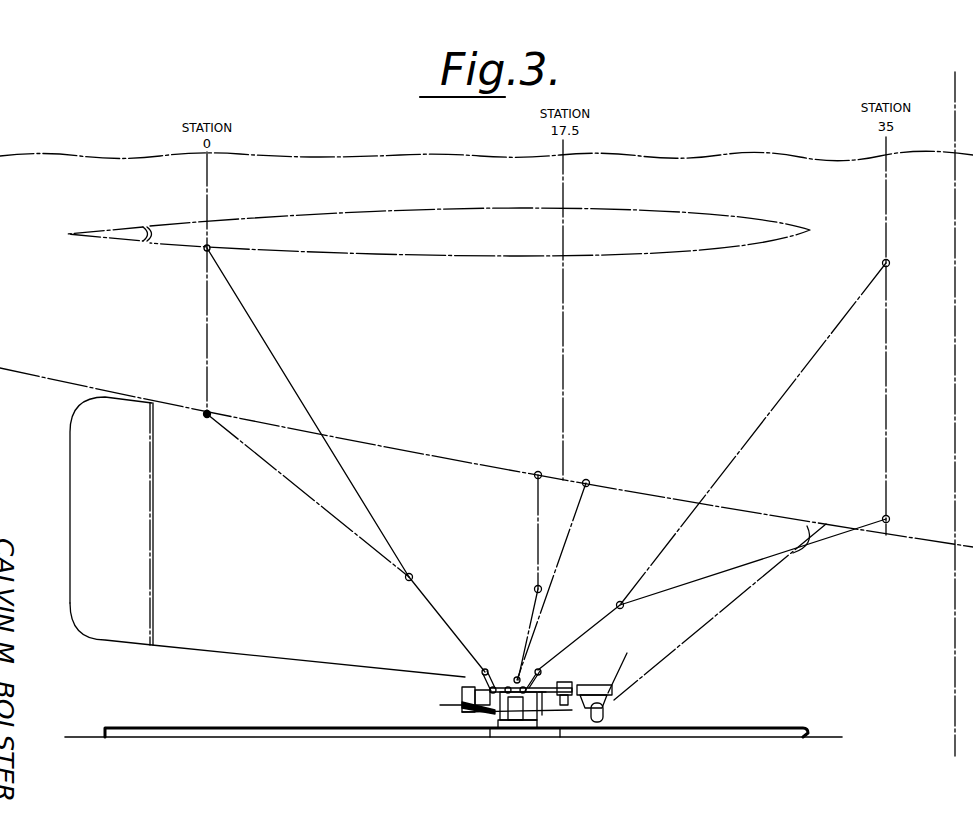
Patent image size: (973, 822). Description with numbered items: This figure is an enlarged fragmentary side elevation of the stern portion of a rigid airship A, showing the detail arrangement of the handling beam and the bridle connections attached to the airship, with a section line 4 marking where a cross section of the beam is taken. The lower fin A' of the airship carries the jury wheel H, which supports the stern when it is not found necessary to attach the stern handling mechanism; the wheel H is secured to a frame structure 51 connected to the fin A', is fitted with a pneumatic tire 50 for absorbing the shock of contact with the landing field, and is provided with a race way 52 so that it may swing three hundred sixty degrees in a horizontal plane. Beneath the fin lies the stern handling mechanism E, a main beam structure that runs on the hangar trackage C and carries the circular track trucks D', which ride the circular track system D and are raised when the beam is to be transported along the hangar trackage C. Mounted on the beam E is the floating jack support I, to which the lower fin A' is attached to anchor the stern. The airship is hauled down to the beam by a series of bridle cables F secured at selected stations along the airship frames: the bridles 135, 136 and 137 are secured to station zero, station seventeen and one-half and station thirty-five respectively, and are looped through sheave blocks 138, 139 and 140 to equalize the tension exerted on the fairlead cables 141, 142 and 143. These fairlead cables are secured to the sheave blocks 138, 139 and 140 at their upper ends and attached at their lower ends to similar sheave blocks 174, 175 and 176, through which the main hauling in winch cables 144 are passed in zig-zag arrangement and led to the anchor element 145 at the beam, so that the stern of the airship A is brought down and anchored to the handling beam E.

The section line 4- 4 is at (934, 80).
The rigid airship A is at (486, 326).
The lower fin A' is at (267, 537).
The hangar trackage C is at (738, 726).
The circular track system D is at (522, 758).
The circular track trucks D' is at (448, 751).
The stern handling mechanism E is at (468, 718).
The bridle cables F is at (375, 515).
The jury wheel H is at (612, 700).
The floating jack support I is at (468, 694).
The pneumatic tire 50 is at (614, 712).
The frame structure 51 is at (609, 676).
The race way 52 is at (655, 680).
The bridle 135 is at (258, 455).
The bridle 136 is at (538, 505).
The bridle 137 is at (672, 533).
The sheave block 138 is at (413, 577).
The sheave block 139 is at (542, 589).
The sheave block 140 is at (624, 607).
The fairlead cable 141 is at (450, 624).
The fairlead cable 142 is at (540, 622).
The fairlead cable 143 is at (567, 650).
The main hauling in winch cables 144 is at (460, 690).
The pedestal 145 is at (537, 700).
The sheave block 174 is at (483, 672).
The sheave block 175 is at (512, 672).
The sheave block 176 is at (542, 672).